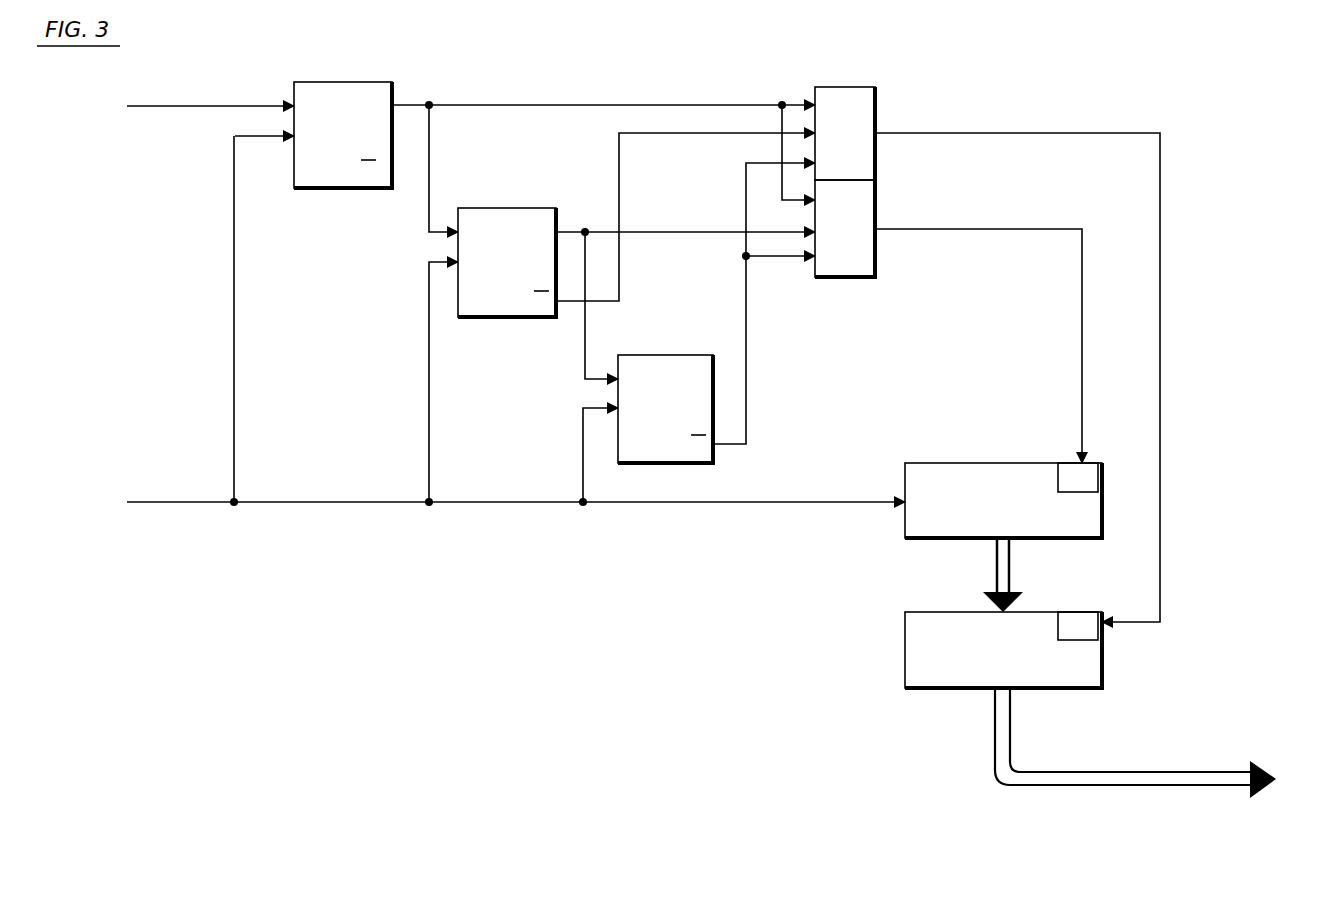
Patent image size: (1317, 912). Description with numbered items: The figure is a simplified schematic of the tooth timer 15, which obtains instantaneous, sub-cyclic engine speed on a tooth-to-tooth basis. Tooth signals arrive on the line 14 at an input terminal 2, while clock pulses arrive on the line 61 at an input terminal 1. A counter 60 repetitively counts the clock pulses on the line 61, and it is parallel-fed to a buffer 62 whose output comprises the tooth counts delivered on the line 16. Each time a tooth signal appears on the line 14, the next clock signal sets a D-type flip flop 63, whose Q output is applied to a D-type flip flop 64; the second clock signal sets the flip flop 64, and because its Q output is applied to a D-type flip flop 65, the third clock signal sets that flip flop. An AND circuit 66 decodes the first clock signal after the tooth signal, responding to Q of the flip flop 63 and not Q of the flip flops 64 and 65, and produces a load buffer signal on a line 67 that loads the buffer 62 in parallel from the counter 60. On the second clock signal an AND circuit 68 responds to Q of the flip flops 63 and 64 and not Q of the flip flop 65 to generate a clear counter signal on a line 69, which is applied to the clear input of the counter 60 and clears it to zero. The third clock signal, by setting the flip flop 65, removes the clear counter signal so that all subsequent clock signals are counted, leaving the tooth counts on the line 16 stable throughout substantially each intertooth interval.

The clock input terminal 1 is at (153, 499).
The tooth signal input terminal 2 is at (104, 105).
The line 14 is at (249, 105).
The tooth timer 15 is at (1040, 76).
The line 16 is at (1152, 780).
The counter 60 is at (975, 463).
The line 61 is at (770, 500).
The buffer 62 is at (905, 648).
The D-type flip flop 63 is at (350, 82).
The D-type flip flop 64 is at (505, 208).
The D-type flip flop 65 is at (660, 355).
The AND circuit 66 is at (843, 87).
The line 67 is at (1108, 132).
The AND circuit 68 is at (846, 270).
The line 69 is at (1082, 323).